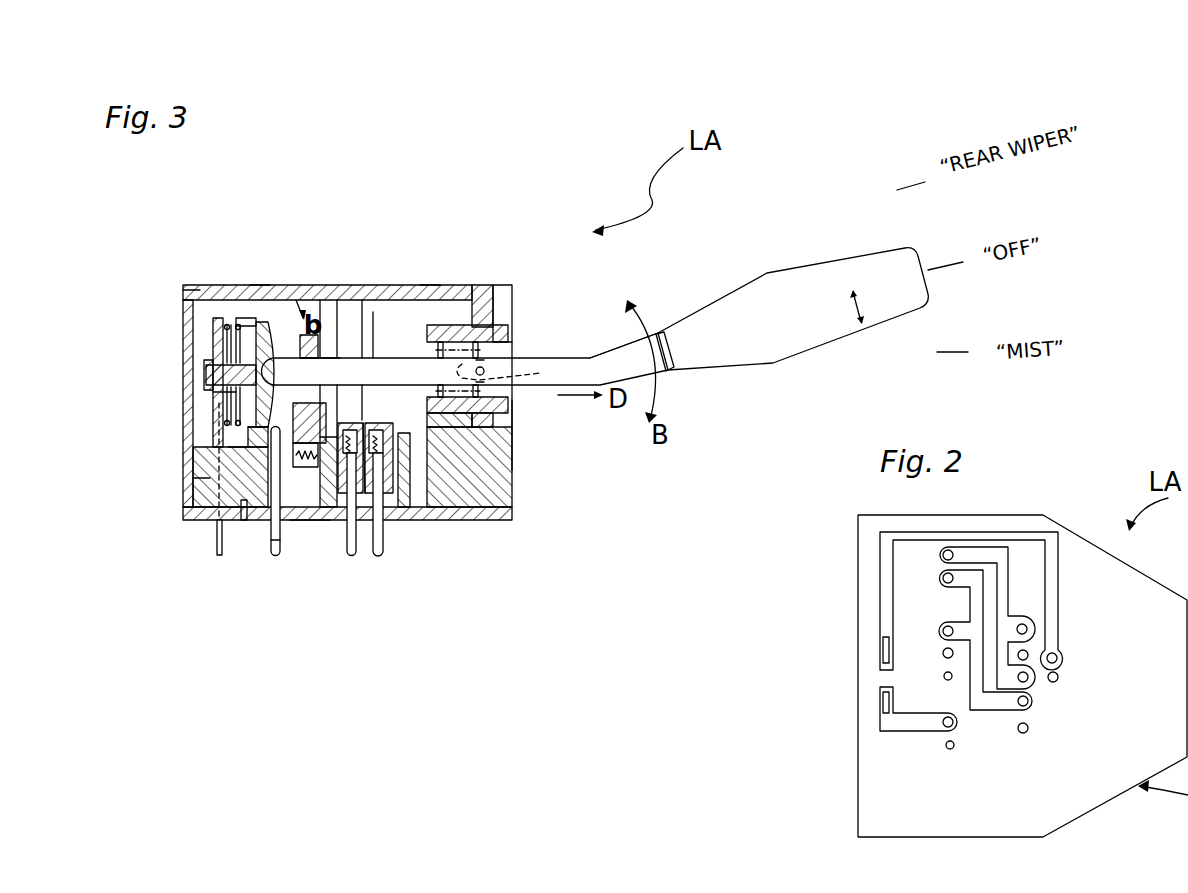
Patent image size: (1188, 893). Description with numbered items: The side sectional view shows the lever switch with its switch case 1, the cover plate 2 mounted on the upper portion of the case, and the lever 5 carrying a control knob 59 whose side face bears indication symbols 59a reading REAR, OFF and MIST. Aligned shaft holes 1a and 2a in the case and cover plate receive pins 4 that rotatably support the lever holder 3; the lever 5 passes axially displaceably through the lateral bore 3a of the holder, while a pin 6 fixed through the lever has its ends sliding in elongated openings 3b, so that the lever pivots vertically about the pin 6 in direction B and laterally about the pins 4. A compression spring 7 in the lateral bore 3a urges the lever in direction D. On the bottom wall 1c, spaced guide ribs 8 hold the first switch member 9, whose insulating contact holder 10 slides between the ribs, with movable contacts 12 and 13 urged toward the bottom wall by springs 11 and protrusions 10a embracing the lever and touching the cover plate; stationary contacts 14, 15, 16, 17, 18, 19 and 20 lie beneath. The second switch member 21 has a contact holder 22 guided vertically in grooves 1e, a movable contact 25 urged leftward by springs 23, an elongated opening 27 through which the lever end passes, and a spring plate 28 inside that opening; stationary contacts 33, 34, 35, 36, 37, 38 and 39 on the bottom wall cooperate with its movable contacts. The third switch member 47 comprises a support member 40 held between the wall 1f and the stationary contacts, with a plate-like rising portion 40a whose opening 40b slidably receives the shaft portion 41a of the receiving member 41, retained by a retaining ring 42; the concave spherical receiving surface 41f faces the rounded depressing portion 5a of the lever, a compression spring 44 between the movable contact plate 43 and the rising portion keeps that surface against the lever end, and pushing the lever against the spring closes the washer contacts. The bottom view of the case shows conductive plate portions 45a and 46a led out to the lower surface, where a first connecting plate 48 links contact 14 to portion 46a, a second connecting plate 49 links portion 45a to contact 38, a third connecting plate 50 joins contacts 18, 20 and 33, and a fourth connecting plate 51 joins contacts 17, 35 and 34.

In FIG. 3, the switch case 1 is at (507, 506).
In FIG. 3, the shaft hole 1a is at (514, 430).
In FIG. 3, the bottom wall 1c is at (305, 522).
In FIG. 2, the bottom wall 1c is at (1045, 815).
In FIG. 3, the groove 1e is at (258, 300).
In FIG. 3, the wall 1f is at (186, 298).
In FIG. 3, the cover plate 2 is at (313, 303).
In FIG. 3, the shaft hole 2a is at (503, 288).
In FIG. 3, the lever holder 3 is at (456, 300).
In FIG. 3, the lateral bore 3a is at (425, 330).
In FIG. 3, the elongated opening 3b is at (514, 374).
In FIG. 3, the pin 4 is at (483, 300).
In FIG. 3, the lever 5 is at (618, 357).
In FIG. 3, the depressing portion 5a is at (250, 430).
In FIG. 3, the pin 6 is at (485, 366).
In FIG. 3, the compression spring 7 is at (493, 420).
In FIG. 3, the guide rib 8 is at (320, 520).
In FIG. 3, the first switch member 9 is at (430, 298).
In FIG. 3, the contact holder 10 is at (367, 423).
In FIG. 3, the protrusion 10a is at (373, 310).
In FIG. 3, the spring 11 is at (425, 507).
In FIG. 3, the movable contact 12 is at (397, 520).
In FIG. 3, the movable contact 13 is at (378, 556).
In FIG. 2, the stationary contact 14 is at (1063, 660).
In FIG. 2, the stationary contact 15 is at (1060, 680).
In FIG. 2, the stationary contact 16 is at (1030, 732).
In FIG. 2, the stationary contact 17 is at (1030, 706).
In FIG. 2, the stationary contact 18 is at (1030, 682).
In FIG. 2, the stationary contact 19 is at (1030, 655).
In FIG. 2, the stationary contact 20 is at (1030, 630).
In FIG. 3, the second switch member 21 is at (345, 300).
In FIG. 3, the contact holder 22 is at (300, 338).
In FIG. 3, the spring 23 is at (242, 522).
In FIG. 3, the movable contact 25 is at (280, 533).
In FIG. 3, the elongated opening 27 is at (325, 360).
In FIG. 3, the spring plate 28 is at (303, 380).
In FIG. 2, the stationary contact 33 is at (942, 555).
In FIG. 2, the stationary contact 34 is at (942, 578).
In FIG. 2, the stationary contact 35 is at (940, 630).
In FIG. 2, the stationary contact 36 is at (942, 653).
In FIG. 3, the stationary contact 37 is at (272, 557).
In FIG. 2, the stationary contact 37 is at (942, 676).
In FIG. 2, the stationary contact 38 is at (956, 722).
In FIG. 2, the stationary contact 39 is at (953, 750).
In FIG. 3, the support member 40 is at (200, 462).
In FIG. 3, the plate-like rising portion 40a is at (240, 448).
In FIG. 3, the opening 40b is at (206, 372).
In FIG. 3, the receiving member 41 is at (218, 318).
In FIG. 3, the shaft portion 41a is at (220, 390).
In FIG. 3, the receiving surface 41f is at (213, 338).
In FIG. 3, the retaining ring 42 is at (225, 346).
In FIG. 3, the movable contact plate 43 is at (190, 486).
In FIG. 3, the compression spring 44 is at (210, 364).
In FIG. 3, the electrically conductive plate portion 45a is at (205, 478).
In FIG. 2, the electrically conductive plate portion 45a is at (880, 705).
In FIG. 2, the electrically conductive plate portion 46a is at (880, 650).
In FIG. 3, the third switch member 47 is at (236, 306).
In FIG. 2, the first connecting plate 48 is at (1058, 580).
In FIG. 2, the second connecting plate 49 is at (905, 724).
In FIG. 2, the third connecting plate 50 is at (1003, 563).
In FIG. 2, the fourth connecting plate 51 is at (972, 600).
In FIG. 3, the control knob 59 is at (767, 273).
In FIG. 3, the indication symbol 59a is at (860, 288).